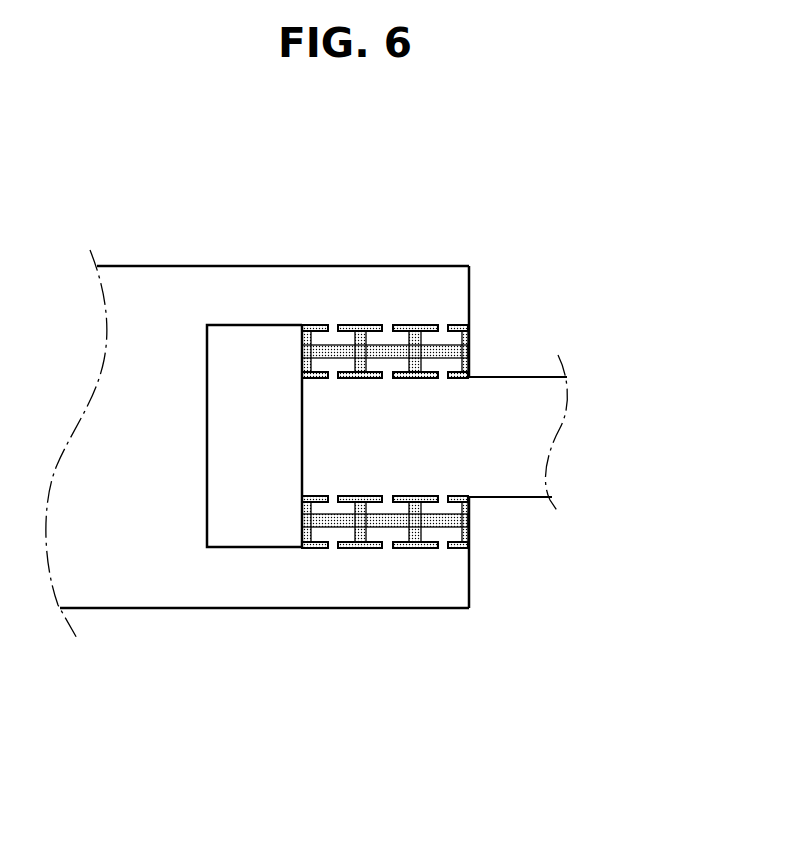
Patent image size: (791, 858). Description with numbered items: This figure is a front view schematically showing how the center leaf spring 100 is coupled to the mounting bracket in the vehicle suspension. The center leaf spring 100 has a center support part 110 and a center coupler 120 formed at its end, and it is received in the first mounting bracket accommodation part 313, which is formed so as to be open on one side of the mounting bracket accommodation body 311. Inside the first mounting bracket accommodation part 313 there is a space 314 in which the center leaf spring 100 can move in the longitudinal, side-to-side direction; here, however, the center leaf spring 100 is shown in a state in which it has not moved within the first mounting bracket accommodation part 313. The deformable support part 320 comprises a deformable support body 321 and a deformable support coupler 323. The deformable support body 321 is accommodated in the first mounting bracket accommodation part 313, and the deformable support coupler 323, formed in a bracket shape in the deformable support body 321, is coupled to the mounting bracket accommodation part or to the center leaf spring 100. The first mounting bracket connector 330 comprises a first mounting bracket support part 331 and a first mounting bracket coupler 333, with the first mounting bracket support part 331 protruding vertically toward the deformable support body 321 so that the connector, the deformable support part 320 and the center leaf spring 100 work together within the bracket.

The center leaf spring 100 is at (532, 433).
The center support part 110 is at (443, 375).
The center coupler 120 is at (453, 365).
The mounting bracket accommodation body 311 is at (128, 575).
The first mounting bracket accommodation part 313 is at (244, 585).
The space 314 is at (237, 506).
The deformable support part 320 is at (326, 345).
The deformable support body 321 is at (302, 348).
The deformable support coupler 323 is at (317, 325).
The first mounting bracket connector 330 is at (397, 342).
The first mounting bracket support part 331 is at (332, 330).
The first mounting bracket coupler 333 is at (353, 343).